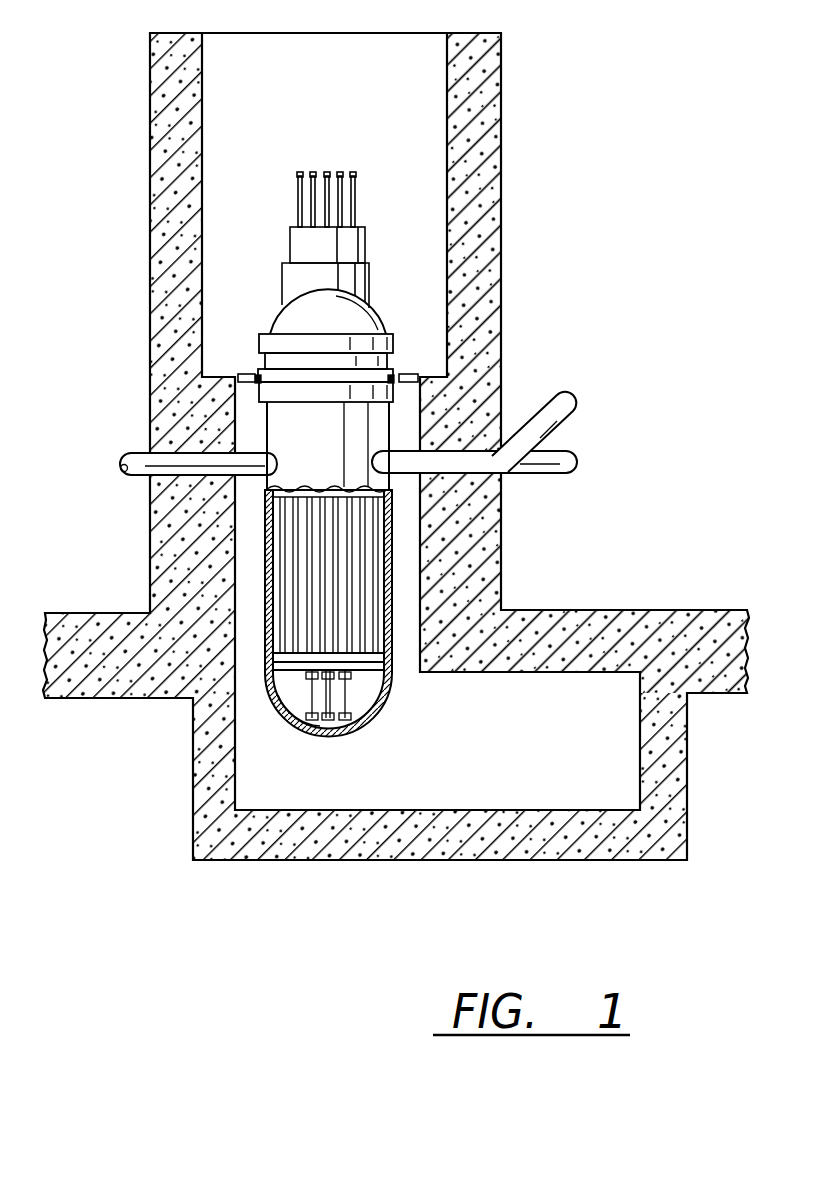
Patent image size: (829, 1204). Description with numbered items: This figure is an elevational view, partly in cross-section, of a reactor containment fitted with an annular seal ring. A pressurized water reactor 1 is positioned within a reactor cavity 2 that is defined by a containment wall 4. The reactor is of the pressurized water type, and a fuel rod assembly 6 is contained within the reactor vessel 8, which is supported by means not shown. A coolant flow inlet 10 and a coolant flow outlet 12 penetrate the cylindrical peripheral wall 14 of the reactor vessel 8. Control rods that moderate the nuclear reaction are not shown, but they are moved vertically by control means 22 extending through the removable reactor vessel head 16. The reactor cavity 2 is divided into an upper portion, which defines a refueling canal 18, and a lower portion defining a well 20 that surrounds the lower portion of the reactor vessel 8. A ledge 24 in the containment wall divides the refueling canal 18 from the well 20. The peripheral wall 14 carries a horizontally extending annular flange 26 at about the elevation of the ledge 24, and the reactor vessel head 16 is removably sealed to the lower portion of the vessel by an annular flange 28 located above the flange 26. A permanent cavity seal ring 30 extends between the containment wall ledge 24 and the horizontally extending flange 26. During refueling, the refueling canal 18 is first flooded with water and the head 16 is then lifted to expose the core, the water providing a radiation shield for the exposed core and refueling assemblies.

The pressurized water reactor 1 is at (313, 446).
The reactor cavity 2 is at (252, 439).
The containment wall 4 is at (496, 108).
The fuel rod assembly 6 is at (358, 577).
The reactor vessel 8 is at (376, 415).
The coolant flow inlet 10 is at (550, 420).
The coolant flow outlet 12 is at (147, 467).
The cylindrical peripheral wall 14 is at (266, 418).
The reactor vessel head 16 is at (364, 324).
The refueling canal 18 is at (332, 77).
The well 20 is at (520, 753).
The control means 22 is at (356, 245).
The ledge 24 is at (418, 378).
The annular flange 26 is at (393, 359).
The annular flange 28 is at (373, 381).
The permanent cavity seal ring 30 is at (253, 376).